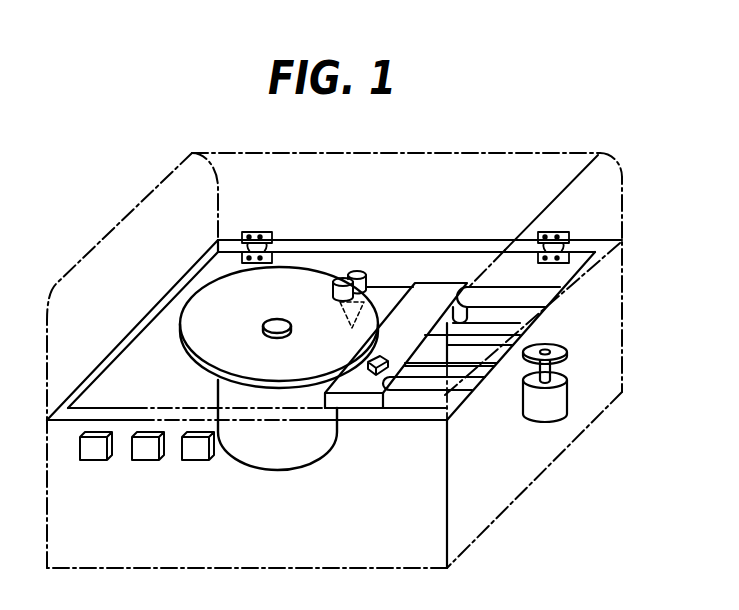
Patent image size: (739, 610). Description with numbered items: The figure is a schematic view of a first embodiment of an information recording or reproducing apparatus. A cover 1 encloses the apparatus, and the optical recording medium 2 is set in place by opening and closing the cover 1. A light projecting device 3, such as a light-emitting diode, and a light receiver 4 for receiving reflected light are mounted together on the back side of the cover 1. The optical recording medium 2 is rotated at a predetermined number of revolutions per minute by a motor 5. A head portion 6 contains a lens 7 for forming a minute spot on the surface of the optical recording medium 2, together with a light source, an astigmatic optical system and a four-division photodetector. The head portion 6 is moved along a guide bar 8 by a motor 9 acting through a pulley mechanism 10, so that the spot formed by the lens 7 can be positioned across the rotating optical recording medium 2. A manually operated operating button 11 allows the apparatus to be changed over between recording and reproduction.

The cover 1 is at (515, 153).
The optical recording medium 2 is at (193, 318).
The light projecting device 3 is at (333, 283).
The light receiver 4 is at (367, 284).
The motor 5 is at (278, 462).
The head portion 6 is at (358, 402).
The lens 7 is at (383, 357).
The guide bar 8 is at (530, 288).
The motor 9 is at (562, 398).
The pulley mechanism 10 is at (563, 348).
The operating button 11 is at (214, 462).